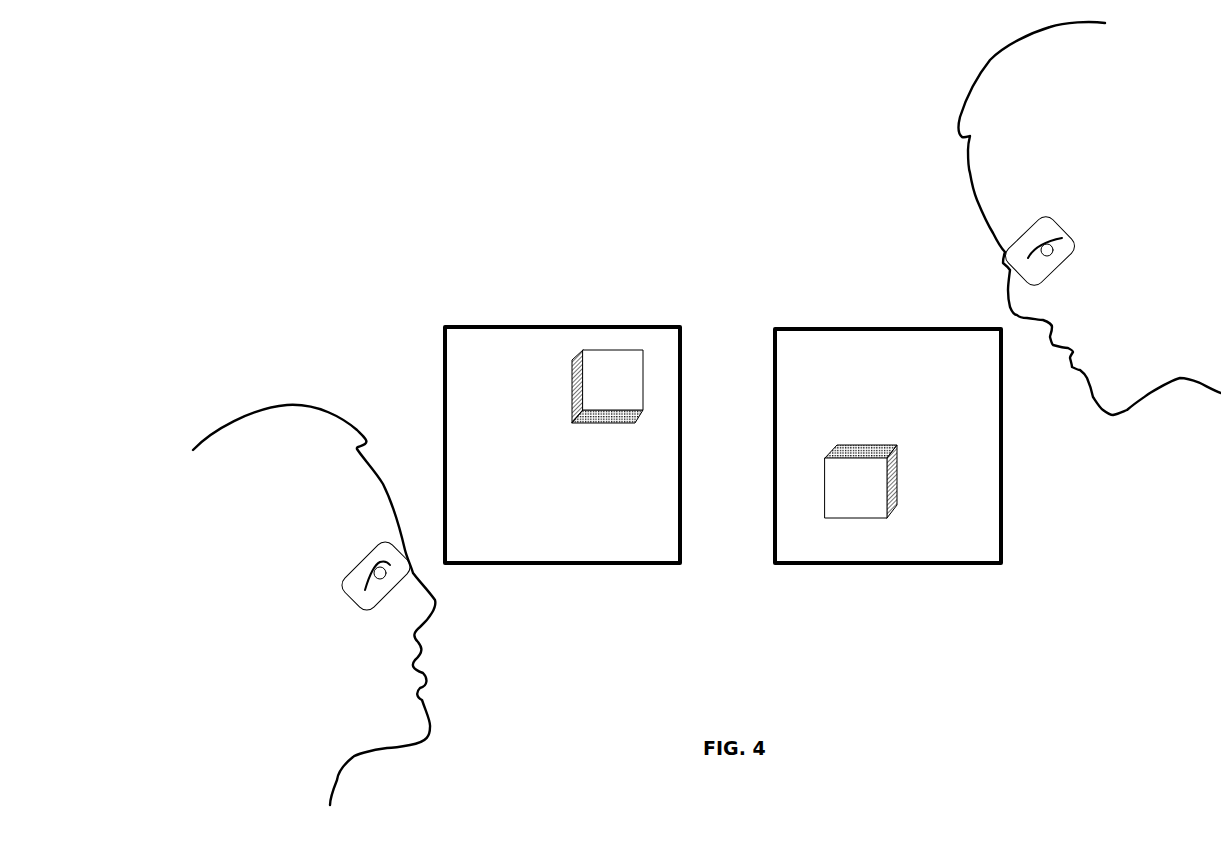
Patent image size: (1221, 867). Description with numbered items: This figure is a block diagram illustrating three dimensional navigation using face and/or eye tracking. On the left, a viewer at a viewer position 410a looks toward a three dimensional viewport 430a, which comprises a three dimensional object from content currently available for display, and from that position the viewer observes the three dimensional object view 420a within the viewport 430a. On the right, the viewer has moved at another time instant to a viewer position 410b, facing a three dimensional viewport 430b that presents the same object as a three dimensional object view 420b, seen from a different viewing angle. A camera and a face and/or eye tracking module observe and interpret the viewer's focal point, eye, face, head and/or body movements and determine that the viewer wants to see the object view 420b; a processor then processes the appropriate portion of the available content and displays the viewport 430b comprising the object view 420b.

The viewer position 410a is at (240, 465).
The viewer position 410b is at (1115, 45).
The 3D object view 420a is at (578, 375).
The 3D object view 420b is at (897, 464).
The 3D viewport 430a is at (494, 325).
The 3D viewport 430b is at (830, 326).